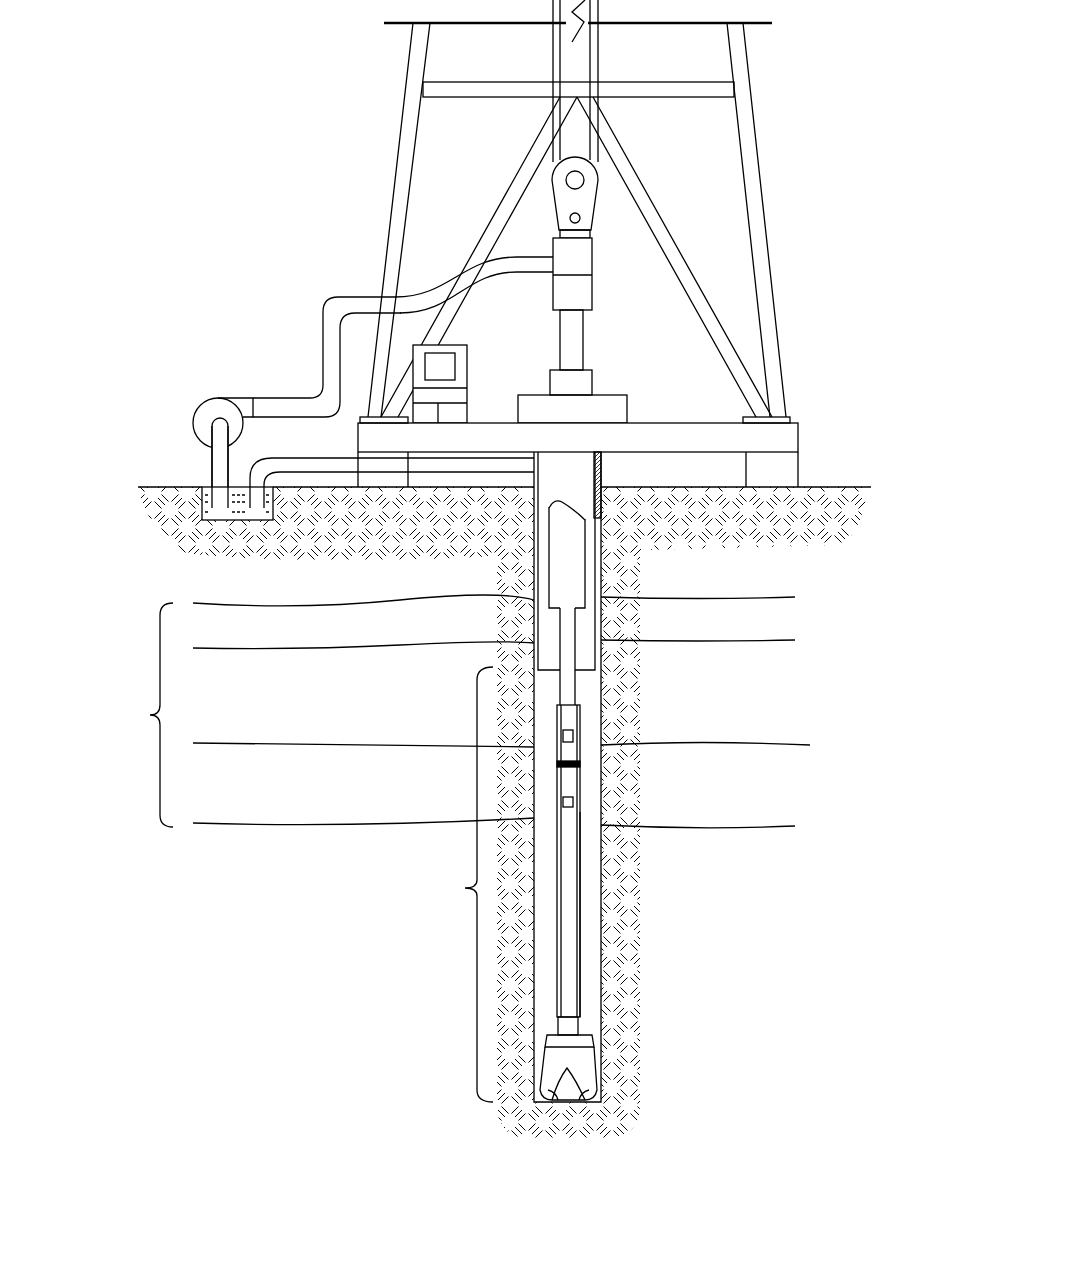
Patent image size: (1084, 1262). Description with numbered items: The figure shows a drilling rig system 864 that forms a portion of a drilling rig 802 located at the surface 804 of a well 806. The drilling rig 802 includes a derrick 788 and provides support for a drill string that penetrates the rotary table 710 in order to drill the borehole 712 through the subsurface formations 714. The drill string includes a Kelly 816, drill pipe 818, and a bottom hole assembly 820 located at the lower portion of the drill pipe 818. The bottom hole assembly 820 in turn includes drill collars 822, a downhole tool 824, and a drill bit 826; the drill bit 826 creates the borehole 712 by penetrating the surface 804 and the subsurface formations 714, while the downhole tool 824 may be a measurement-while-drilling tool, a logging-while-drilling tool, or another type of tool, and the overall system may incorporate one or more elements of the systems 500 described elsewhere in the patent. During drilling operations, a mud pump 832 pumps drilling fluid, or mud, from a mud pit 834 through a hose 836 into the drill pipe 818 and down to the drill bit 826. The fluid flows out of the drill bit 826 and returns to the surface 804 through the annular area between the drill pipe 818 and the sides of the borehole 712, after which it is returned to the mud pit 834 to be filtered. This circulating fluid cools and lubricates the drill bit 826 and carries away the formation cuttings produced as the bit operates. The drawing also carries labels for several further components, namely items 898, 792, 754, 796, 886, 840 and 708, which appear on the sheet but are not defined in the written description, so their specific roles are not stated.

The drilling rig system 864 is at (268, 112).
The derrick 788 is at (752, 106).
The drilling rig 802 is at (626, 208).
The Kelly 816 is at (585, 330).
The rotary table 710 is at (532, 395).
The base / rig floor block 898 is at (607, 395).
The hoses 792 is at (458, 338).
The hose 836 is at (323, 347).
The control unit 754 is at (466, 367).
The controller module 796 is at (455, 366).
The mud pump 832 is at (228, 397).
The mud pit 834 is at (222, 517).
The rig platform 886 is at (798, 425).
The surface 804 is at (821, 487).
The well 806 is at (604, 480).
The wellbore 840 is at (590, 698).
The drill collars 822 is at (590, 567).
The drill pipe 818 is at (568, 643).
The drill string 708 is at (582, 887).
The system 500 is at (581, 718).
The borehole 712 is at (596, 965).
The downhole tool 824 is at (568, 997).
The drill bit 826 is at (578, 1057).
The subsurface formations 714 is at (445, 711).
The bottom hole assembly 820 is at (448, 884).